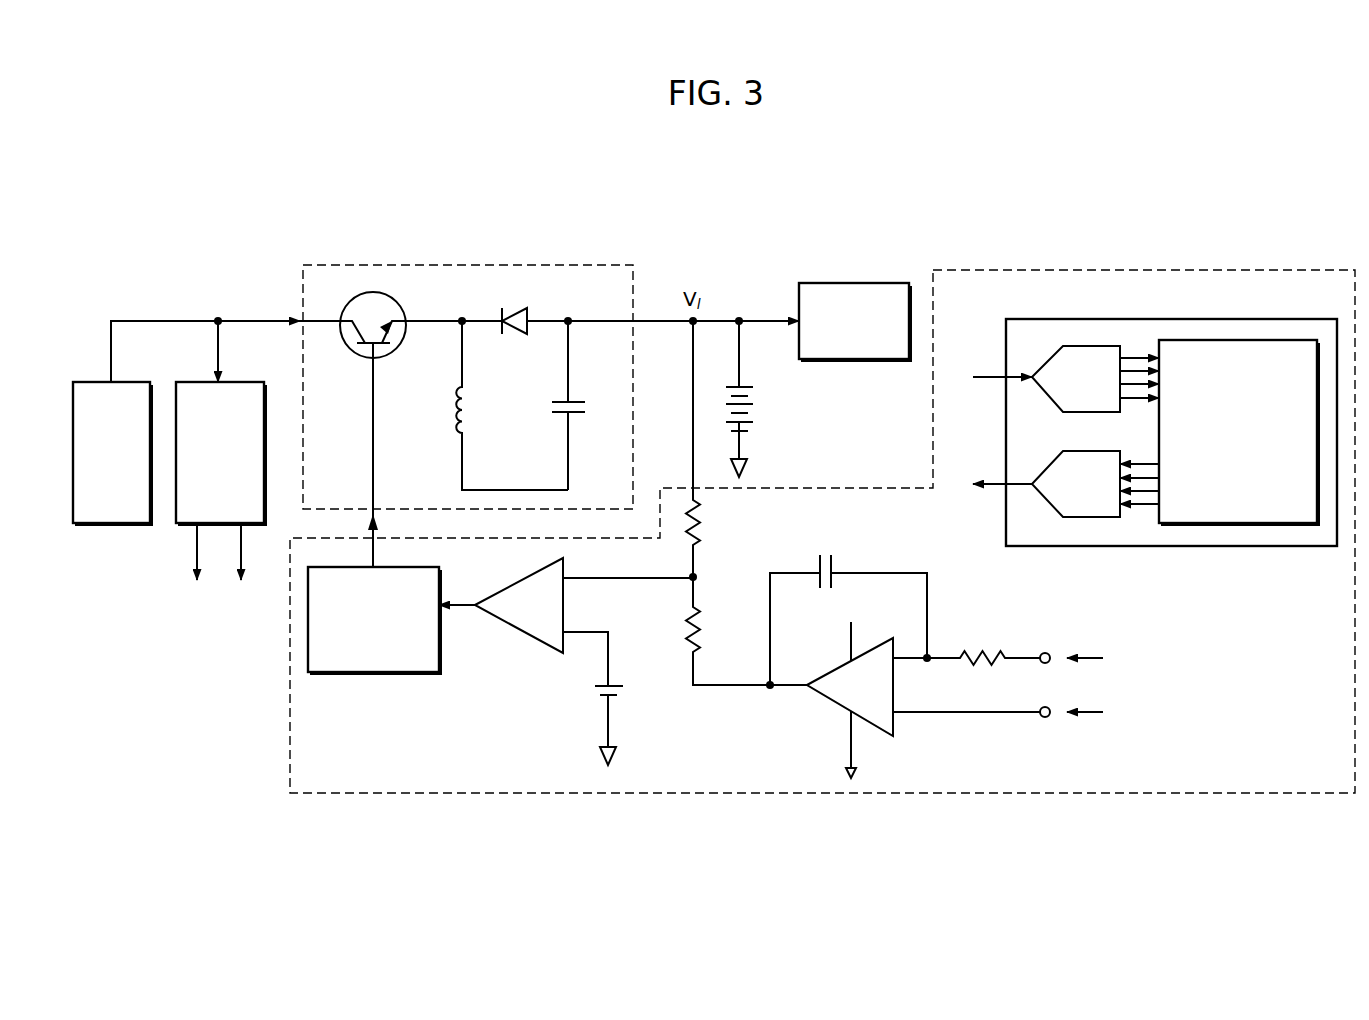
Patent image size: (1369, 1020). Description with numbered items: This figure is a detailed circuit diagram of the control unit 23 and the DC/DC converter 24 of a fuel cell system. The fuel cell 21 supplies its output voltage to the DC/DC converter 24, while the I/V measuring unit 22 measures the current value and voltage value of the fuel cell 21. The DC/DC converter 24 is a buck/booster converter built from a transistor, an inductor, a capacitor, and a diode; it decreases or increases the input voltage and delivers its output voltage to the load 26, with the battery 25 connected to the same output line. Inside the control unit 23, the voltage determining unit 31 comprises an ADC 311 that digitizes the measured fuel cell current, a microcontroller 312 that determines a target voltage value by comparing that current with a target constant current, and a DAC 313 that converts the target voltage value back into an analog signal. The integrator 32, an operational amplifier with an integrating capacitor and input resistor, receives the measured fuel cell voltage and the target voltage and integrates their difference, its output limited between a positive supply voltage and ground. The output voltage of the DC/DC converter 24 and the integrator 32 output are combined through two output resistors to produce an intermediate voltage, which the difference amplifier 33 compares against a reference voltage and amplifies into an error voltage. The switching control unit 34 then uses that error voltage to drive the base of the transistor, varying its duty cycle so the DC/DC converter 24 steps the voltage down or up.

The fuel cell 21 is at (125, 380).
The current/voltage (I/V) measuring unit 22 is at (228, 378).
The control unit 23 is at (1107, 270).
The DC/DC converter 24 is at (470, 265).
The battery 25 is at (762, 411).
The load 26 is at (867, 282).
The voltage determining unit 31 is at (1147, 319).
The Analog-Digital-Converter (ADC) 311 is at (1085, 347).
The microcontroller 312 is at (1255, 342).
The Digital-Analog-Converter (DAC) 313 is at (1085, 450).
The integrator 32 is at (823, 698).
The difference amplifier 33 is at (520, 634).
The switching control unit 34 is at (372, 673).